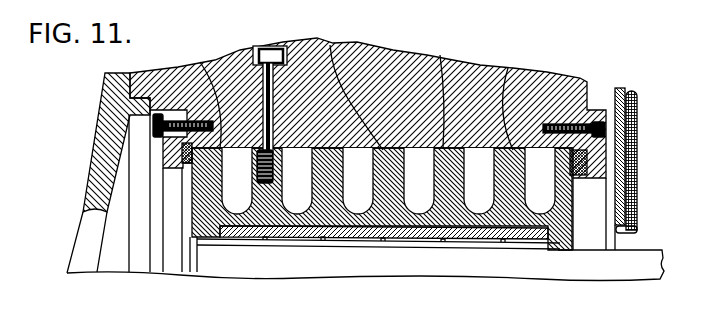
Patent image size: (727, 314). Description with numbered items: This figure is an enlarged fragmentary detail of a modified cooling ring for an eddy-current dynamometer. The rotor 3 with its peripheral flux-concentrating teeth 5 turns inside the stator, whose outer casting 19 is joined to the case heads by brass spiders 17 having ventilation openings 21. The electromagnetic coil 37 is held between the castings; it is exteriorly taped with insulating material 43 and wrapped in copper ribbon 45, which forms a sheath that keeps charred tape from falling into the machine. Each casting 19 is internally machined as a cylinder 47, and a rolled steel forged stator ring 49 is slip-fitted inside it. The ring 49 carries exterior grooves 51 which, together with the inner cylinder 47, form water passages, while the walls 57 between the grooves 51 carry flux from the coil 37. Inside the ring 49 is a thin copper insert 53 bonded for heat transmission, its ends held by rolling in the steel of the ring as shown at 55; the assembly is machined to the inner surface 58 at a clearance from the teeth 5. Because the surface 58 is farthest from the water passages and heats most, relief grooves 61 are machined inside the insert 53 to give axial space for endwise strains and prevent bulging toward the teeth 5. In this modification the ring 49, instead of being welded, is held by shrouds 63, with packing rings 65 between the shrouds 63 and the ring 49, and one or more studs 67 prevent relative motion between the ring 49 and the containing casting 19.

The rotor 3 is at (637, 267).
The flux-concentrating teeth 5 is at (497, 268).
The brass spiders 17 is at (103, 168).
The outer casting 19 is at (358, 65).
The openings 21 is at (88, 235).
The electromagnetic coil 37 is at (626, 170).
The insulating material 43 is at (637, 105).
The copper ribbon 45 is at (637, 232).
The inner cylinder 47 is at (440, 55).
The stator ring 49 is at (450, 215).
The grooves 51 is at (232, 199).
The copper insert 53 is at (485, 237).
The rolled-in ends 55 is at (555, 248).
The walls 57 is at (508, 68).
The inner machined surface 58 is at (287, 241).
The relief grooves 61 is at (443, 247).
The shrouds 63 is at (587, 156).
The packing rings 65 is at (578, 178).
The studs 67 is at (258, 56).